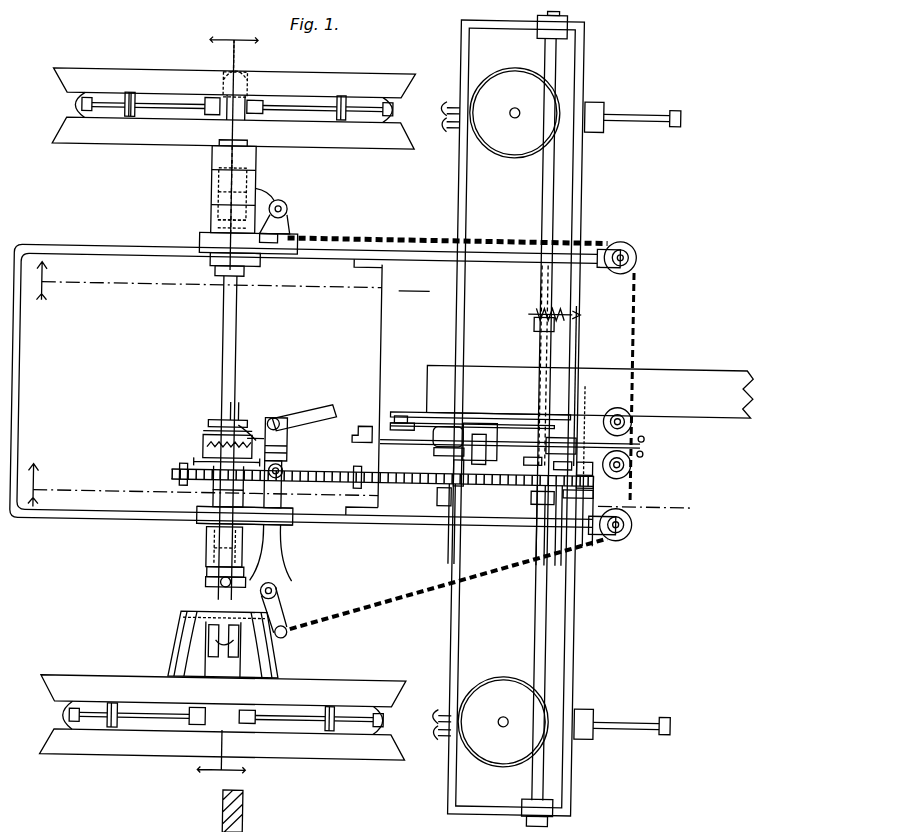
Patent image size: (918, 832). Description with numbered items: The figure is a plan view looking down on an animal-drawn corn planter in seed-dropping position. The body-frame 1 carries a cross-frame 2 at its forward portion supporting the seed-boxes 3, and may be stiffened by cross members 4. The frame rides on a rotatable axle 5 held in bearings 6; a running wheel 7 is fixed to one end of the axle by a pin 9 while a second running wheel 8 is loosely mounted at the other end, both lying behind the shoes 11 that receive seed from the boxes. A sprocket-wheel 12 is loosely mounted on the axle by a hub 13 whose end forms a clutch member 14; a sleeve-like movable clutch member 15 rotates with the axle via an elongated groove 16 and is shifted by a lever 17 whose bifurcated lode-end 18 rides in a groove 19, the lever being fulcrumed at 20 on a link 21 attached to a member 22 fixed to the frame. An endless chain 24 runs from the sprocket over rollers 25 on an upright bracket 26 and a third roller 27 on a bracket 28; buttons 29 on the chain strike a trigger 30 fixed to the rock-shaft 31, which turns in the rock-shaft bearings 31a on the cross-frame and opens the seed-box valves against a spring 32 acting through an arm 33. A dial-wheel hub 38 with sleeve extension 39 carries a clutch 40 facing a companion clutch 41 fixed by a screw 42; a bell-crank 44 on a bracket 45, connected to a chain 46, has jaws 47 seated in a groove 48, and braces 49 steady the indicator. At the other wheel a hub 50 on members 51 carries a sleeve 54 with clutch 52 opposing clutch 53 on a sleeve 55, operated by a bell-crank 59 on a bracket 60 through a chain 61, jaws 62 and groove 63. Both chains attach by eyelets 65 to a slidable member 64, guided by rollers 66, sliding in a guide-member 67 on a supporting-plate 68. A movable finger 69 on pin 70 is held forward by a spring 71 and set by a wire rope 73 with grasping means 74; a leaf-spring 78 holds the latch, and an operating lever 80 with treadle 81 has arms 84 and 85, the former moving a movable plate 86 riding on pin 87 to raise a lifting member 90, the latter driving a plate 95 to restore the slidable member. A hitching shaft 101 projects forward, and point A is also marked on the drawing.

The body-frame 1 is at (55, 262).
The cross-frame 2 is at (638, 178).
The seed-box 3 is at (508, 417).
The cross member 4 is at (385, 314).
The axle 5 is at (255, 328).
The bearing 6 is at (215, 257).
The running wheel 7 is at (103, 78).
The running wheel 8 is at (97, 742).
The pin 9 is at (258, 70).
The shoe 11 is at (438, 112).
The sprocket-wheel 12 is at (205, 460).
The hub 13 is at (215, 486).
The clutch member 14 is at (215, 435).
The movable clutch member 15 is at (220, 428).
The elongated groove 16 is at (246, 422).
The lever 17 is at (324, 404).
The lode-end 18 is at (262, 438).
The groove 19 is at (232, 410).
The fulcrum 20 is at (290, 440).
The link 21 is at (292, 452).
The member 22 is at (280, 500).
The endless chain 24 is at (452, 505).
The roller 25 is at (604, 491).
The upright bracket 26 is at (604, 490).
The third roller 27 is at (536, 492).
The bracket 28 is at (448, 504).
The button 29 is at (190, 472).
The trigger 30 is at (590, 540).
The rock-shaft 31 is at (544, 210).
The column cap 31a is at (566, 16).
The spring 32 is at (560, 306).
The arm 33 is at (530, 310).
The hub 38 is at (213, 153).
The sleeve extension 39 is at (213, 171).
The clutch 40 is at (215, 188).
The companion clutch 41 is at (213, 204).
The screw 42 is at (213, 221).
The bell-crank 44 is at (272, 196).
The bracket 45 is at (288, 232).
The chain 46 is at (392, 238).
The jaws 47 is at (257, 168).
The groove 48 is at (222, 180).
The brace 49 is at (246, 150).
The hub 50 is at (200, 612).
The member 51 is at (210, 660).
The clutch 52 is at (192, 630).
The clutch 53 is at (188, 636).
The sleeve 54 is at (229, 590).
The sleeve 55 is at (250, 645).
The bell-crank 59 is at (286, 598).
The bracket 60 is at (284, 556).
The chain 61 is at (399, 600).
The jaws 62 is at (214, 560).
The groove 63 is at (215, 572).
The slidable member 64 is at (650, 437).
The eyelet 65 is at (650, 424).
The roller 66 is at (640, 252).
The guide-member 67 is at (562, 430).
The supporting-plate 68 is at (546, 400).
The movable finger 69 is at (582, 455).
The pin 70 is at (526, 458).
The spring 71 is at (574, 454).
The wire rope 73 is at (423, 457).
The grasping means 74 is at (261, 480).
The leaf-spring 78 is at (368, 434).
The operating lever 80 is at (480, 420).
The treadle 81 is at (450, 422).
The arm 84 is at (500, 426).
The arm 85 is at (500, 448).
The movable plate 86 is at (470, 410).
The pin 87 is at (404, 418).
The lifting member 90 is at (438, 467).
The plate 95 is at (594, 430).
The shaft 101 is at (732, 372).
The point A is at (594, 455).